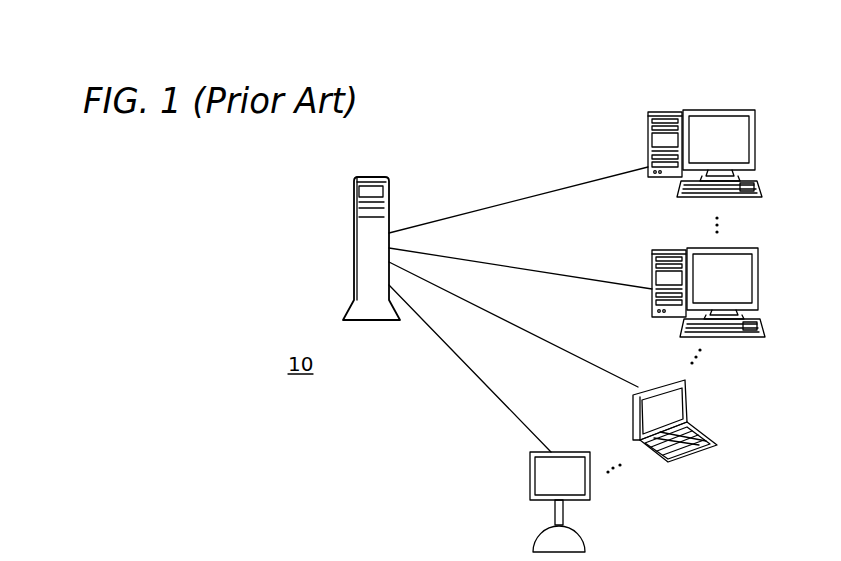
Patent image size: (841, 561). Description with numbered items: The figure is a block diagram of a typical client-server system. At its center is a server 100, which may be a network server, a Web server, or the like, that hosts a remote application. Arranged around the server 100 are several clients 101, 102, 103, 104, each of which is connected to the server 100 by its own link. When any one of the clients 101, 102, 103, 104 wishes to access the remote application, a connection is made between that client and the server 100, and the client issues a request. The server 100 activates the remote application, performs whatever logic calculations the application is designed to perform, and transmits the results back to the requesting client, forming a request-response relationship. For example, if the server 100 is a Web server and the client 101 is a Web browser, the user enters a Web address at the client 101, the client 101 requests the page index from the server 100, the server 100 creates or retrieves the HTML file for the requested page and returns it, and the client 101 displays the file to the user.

The server 100 is at (355, 250).
The client 101 is at (755, 140).
The client 102 is at (758, 272).
The client 103 is at (687, 398).
The client 104 is at (590, 490).